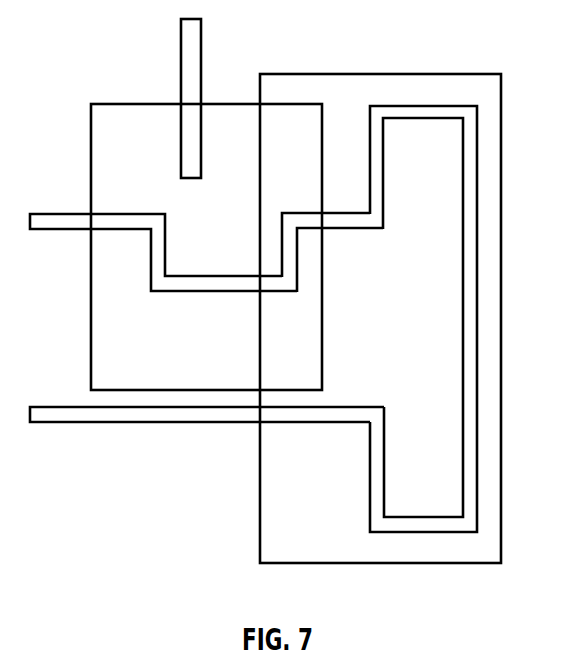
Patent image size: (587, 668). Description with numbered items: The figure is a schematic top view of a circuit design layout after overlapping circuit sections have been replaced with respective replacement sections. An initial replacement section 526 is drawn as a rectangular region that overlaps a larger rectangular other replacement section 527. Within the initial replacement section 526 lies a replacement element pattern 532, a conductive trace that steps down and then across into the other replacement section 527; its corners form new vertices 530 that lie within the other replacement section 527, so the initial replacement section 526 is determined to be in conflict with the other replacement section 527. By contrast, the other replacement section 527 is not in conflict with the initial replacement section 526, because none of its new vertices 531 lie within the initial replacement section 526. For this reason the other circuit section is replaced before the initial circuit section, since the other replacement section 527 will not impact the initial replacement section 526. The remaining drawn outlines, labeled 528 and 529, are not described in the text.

The initial replacement section 526 is at (123, 103).
The other replacement section 527 is at (381, 73).
The first substrate region 528 is at (90, 167).
The ground conductor trace 529 is at (502, 318).
The new vertices 530 is at (283, 212).
The new vertices 531 is at (367, 105).
The replacement element pattern 532 is at (163, 292).